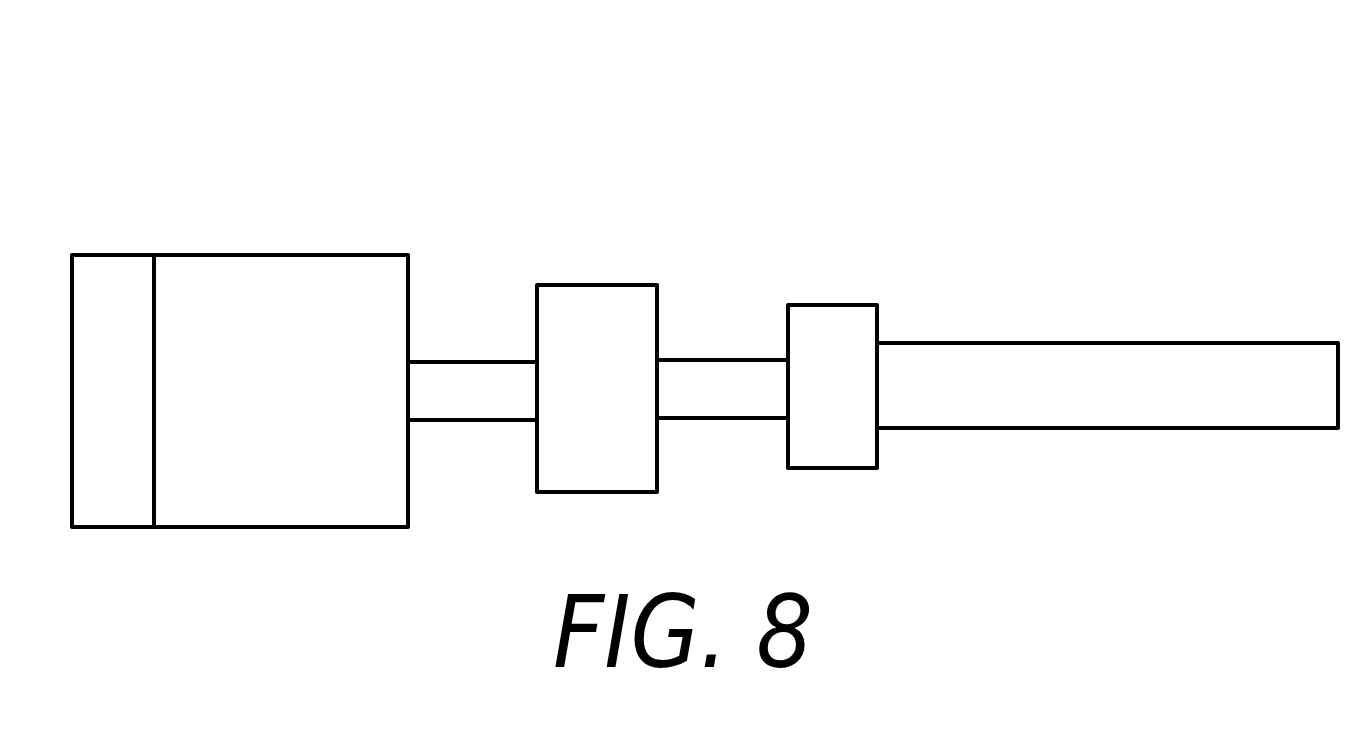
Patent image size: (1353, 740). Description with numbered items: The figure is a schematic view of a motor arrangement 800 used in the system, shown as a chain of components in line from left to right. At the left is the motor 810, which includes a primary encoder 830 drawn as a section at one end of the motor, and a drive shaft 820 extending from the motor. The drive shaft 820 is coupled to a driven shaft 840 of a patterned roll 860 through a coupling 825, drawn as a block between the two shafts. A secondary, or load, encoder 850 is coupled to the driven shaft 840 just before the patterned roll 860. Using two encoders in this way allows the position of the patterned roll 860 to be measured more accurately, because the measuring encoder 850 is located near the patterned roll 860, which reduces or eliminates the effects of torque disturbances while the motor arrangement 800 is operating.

The motor arrangement 800 is at (957, 97).
The motor 810 is at (235, 254).
The primary encoder 830 is at (108, 254).
The drive shaft 820 is at (471, 361).
The coupling 825 is at (603, 284).
The driven shaft 840 is at (730, 359).
The secondary encoder 850 is at (832, 304).
The patterned roll 860 is at (1100, 342).